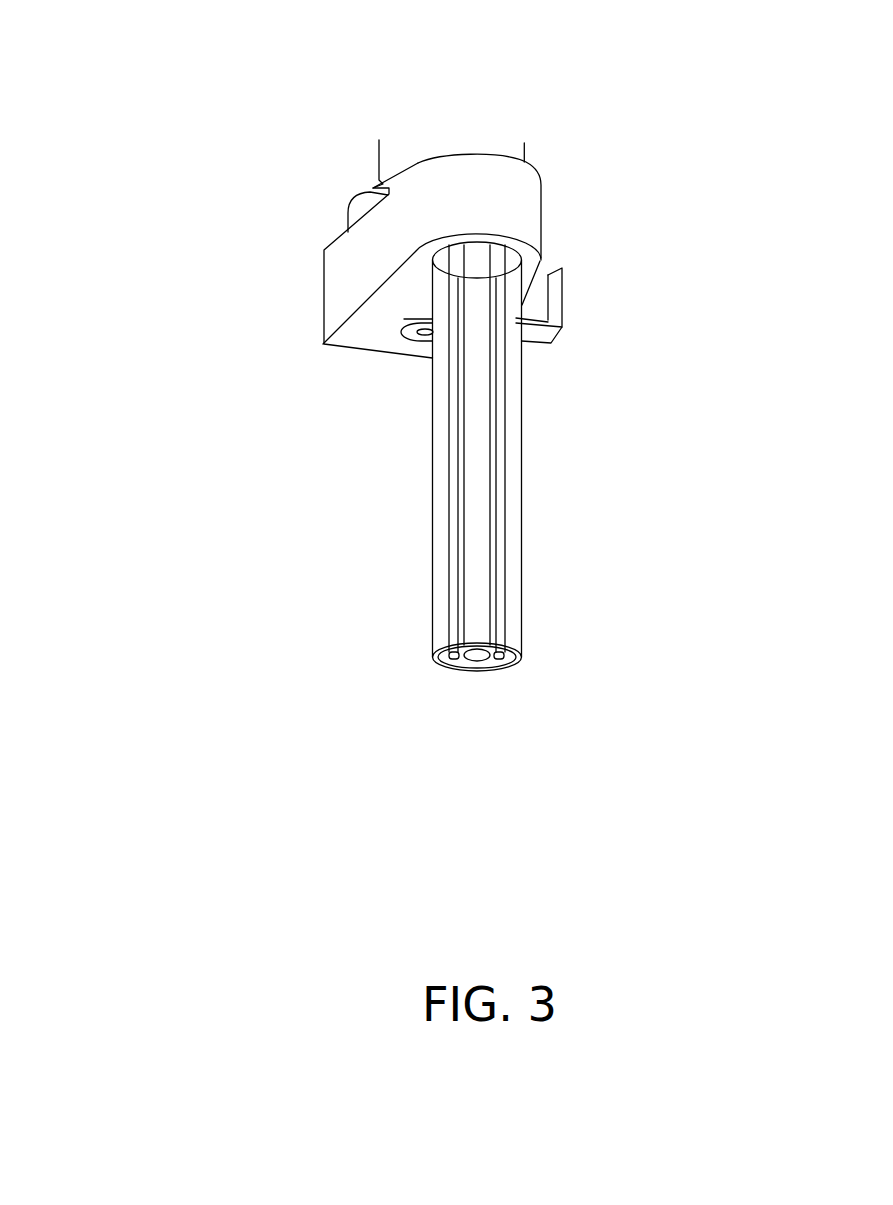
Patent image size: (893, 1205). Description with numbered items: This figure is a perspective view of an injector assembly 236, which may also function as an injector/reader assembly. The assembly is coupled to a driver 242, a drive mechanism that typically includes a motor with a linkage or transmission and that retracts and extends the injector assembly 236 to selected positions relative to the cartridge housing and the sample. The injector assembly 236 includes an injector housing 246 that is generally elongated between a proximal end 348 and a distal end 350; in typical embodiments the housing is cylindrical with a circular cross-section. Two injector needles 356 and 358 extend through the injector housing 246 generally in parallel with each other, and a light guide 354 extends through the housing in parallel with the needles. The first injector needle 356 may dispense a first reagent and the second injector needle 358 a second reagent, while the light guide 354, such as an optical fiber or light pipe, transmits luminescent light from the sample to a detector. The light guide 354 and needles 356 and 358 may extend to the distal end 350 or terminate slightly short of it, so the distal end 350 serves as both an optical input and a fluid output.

The injector assembly 236 is at (160, 156).
The proximal end 348 is at (518, 83).
The driver 242 is at (542, 220).
The injector housing 246 is at (433, 535).
The distal end 350 is at (575, 672).
The light guide 354 is at (477, 668).
The first injector needle 356 is at (447, 670).
The second injector needle 358 is at (503, 670).